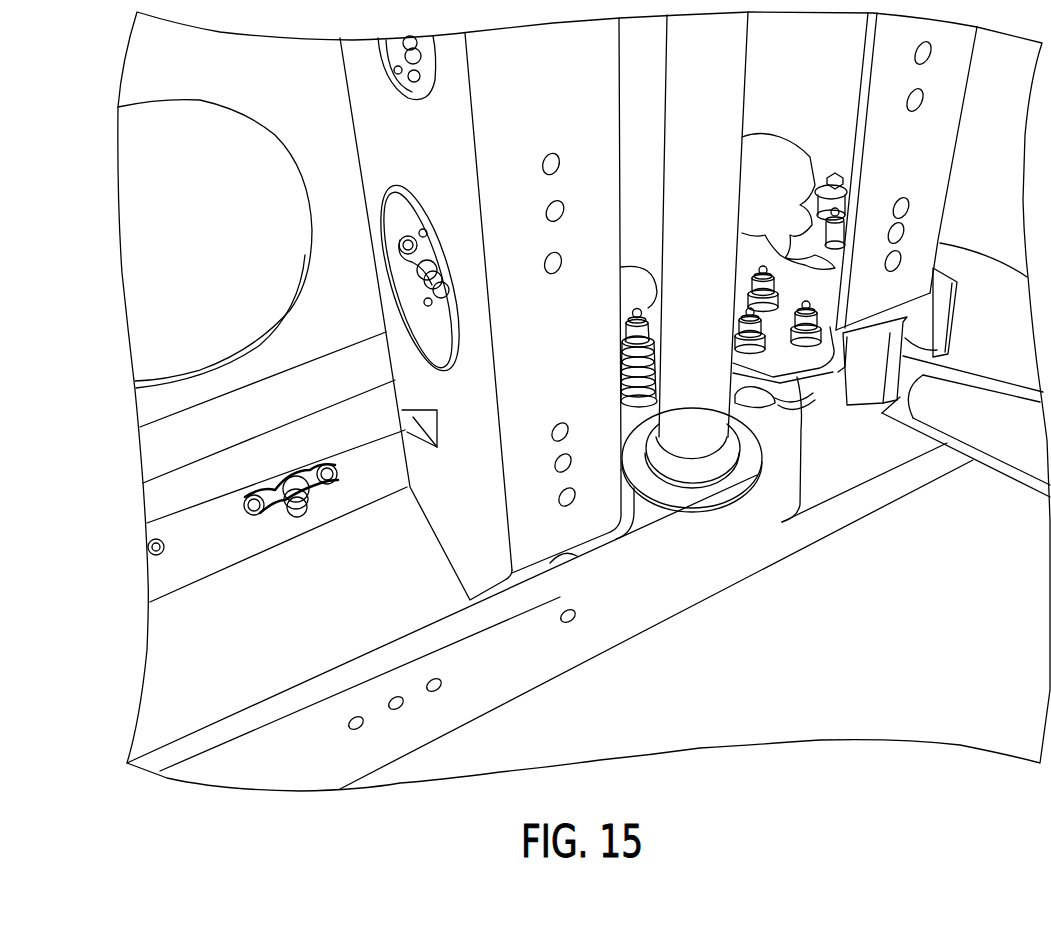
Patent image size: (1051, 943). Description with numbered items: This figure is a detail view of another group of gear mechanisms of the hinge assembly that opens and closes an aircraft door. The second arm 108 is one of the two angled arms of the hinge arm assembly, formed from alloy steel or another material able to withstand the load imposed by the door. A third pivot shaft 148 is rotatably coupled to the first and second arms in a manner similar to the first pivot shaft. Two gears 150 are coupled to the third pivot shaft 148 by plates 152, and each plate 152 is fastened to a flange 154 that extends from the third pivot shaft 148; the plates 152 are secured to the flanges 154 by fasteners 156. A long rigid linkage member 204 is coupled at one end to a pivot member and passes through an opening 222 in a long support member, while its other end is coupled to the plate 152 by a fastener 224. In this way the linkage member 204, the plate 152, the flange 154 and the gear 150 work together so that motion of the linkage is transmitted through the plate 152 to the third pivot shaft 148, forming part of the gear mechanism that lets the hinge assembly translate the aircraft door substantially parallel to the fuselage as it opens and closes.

The second arm 108 is at (618, 630).
The third pivot shaft 148 is at (692, 450).
The gear 150 is at (857, 397).
The plate 152 is at (808, 400).
The flange 154 is at (737, 406).
The fastener 156 is at (738, 333).
The long rigid linkage member 204 is at (207, 488).
The opening 222 is at (433, 407).
The fastener 224 is at (633, 312).